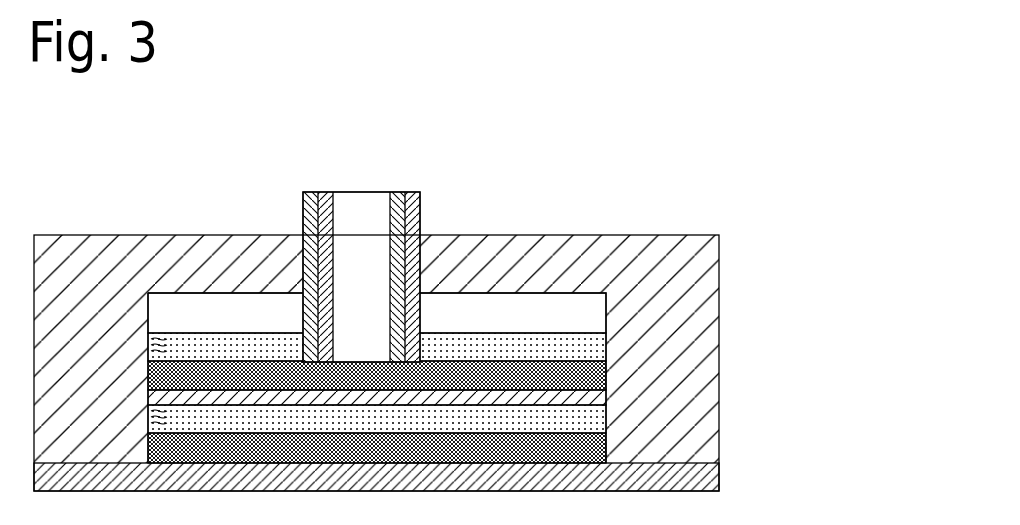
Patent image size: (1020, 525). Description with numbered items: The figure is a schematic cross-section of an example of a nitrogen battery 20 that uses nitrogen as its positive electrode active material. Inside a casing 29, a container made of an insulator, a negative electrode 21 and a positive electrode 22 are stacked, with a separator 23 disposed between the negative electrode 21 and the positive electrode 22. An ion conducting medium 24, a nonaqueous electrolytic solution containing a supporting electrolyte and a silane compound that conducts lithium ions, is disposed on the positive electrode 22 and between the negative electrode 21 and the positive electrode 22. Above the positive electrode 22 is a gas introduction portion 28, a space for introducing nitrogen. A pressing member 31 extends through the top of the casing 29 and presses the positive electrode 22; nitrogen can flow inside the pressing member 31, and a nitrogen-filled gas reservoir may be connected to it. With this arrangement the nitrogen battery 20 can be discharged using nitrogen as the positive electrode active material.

The nitrogen battery 20 is at (682, 189).
The negative electrode 21 is at (607, 448).
The positive electrode 22 is at (607, 375).
The separator 23 is at (607, 395).
The ion conducting medium 24 is at (577, 348).
The gas introduction portion 28 is at (578, 302).
The casing 29 is at (720, 238).
The pressing member 31 is at (422, 220).